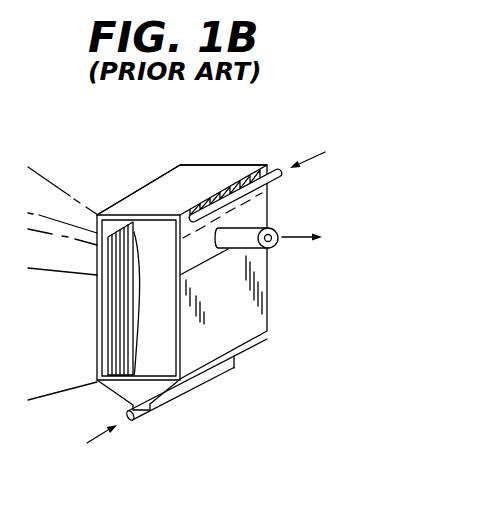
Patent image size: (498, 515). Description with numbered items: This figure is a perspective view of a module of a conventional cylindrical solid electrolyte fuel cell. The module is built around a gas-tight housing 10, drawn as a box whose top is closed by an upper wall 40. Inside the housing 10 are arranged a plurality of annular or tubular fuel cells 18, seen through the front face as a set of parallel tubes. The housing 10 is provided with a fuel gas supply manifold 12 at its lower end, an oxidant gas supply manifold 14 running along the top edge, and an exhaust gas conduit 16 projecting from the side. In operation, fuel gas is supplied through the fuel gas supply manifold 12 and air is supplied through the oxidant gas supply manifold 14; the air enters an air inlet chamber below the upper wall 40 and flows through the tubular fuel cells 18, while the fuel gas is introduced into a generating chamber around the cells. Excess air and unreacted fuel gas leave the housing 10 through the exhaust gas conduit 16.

The gas-tight housing 10 is at (279, 314).
The fuel gas supply manifold 12 is at (152, 412).
The oxidant gas supply manifold 14 is at (278, 181).
The exhaust gas conduit 16 is at (270, 248).
The tubular fuel cell 18 is at (115, 330).
The upper wall 40 is at (148, 198).